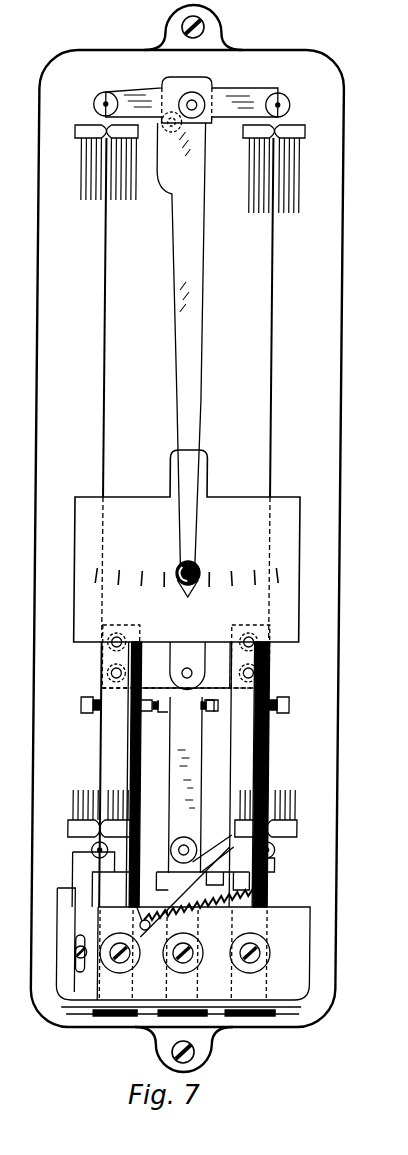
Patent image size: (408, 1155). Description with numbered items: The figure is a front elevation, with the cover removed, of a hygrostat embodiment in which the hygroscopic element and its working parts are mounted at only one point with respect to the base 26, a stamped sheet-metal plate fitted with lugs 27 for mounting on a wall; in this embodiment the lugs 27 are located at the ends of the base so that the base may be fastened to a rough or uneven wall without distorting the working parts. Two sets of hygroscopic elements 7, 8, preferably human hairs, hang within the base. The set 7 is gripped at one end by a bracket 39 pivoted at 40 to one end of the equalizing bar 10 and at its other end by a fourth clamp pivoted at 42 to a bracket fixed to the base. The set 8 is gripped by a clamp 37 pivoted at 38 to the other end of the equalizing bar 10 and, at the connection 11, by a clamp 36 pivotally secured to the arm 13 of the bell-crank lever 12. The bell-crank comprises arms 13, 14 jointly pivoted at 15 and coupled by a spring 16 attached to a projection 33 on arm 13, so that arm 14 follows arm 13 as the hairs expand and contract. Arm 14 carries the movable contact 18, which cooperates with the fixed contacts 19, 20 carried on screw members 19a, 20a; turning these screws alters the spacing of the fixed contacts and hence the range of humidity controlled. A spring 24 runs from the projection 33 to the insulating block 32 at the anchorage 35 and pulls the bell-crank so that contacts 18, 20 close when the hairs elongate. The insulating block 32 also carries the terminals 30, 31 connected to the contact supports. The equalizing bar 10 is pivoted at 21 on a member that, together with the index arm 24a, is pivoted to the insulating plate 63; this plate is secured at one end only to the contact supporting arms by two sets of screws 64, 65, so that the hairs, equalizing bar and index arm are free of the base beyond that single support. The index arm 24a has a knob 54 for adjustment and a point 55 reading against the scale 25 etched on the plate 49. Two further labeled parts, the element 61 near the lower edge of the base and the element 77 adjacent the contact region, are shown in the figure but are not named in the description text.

The set of hygroscopic elements 7 is at (84, 164).
The set of hygroscopic elements 8 is at (292, 187).
The equalizing bar 10 is at (223, 120).
The pivotal connection 11 is at (72, 828).
The bell-crank lever 12 is at (210, 845).
The arm 13 is at (279, 858).
The arm 14 is at (174, 791).
The pivot 15 is at (175, 850).
The spring 16 is at (241, 860).
The movable contact 18 is at (208, 699).
The fixed contact 19 is at (148, 711).
The screw member 19a is at (84, 710).
The fixed contact 20 is at (212, 711).
The screw member 20a is at (291, 705).
The pivot 21 is at (142, 898).
The spring 24 is at (208, 905).
The index arm 24a is at (198, 300).
The scale 25 is at (233, 584).
The base 26 is at (341, 269).
The lugs 27 is at (200, 28).
The terminal 30 is at (124, 965).
The terminal 31 is at (261, 952).
The insulating block 32 is at (183, 672).
The projection 33 is at (258, 882).
The spring anchorage 35 is at (144, 925).
The clamp 36 is at (299, 830).
The clamp 37 is at (294, 134).
The pivotal connection 38 is at (277, 106).
The bracket 39 is at (75, 128).
The pivot 40 is at (101, 103).
The pivot 42 is at (94, 850).
The plate 49 is at (285, 498).
The knob 54 is at (178, 569).
The point 55 is at (190, 593).
The base plate 61 is at (289, 1025).
The insulating plate 63 is at (270, 366).
The screws 64 is at (112, 671).
The screws 65 is at (258, 671).
The contact spring 77 is at (163, 700).